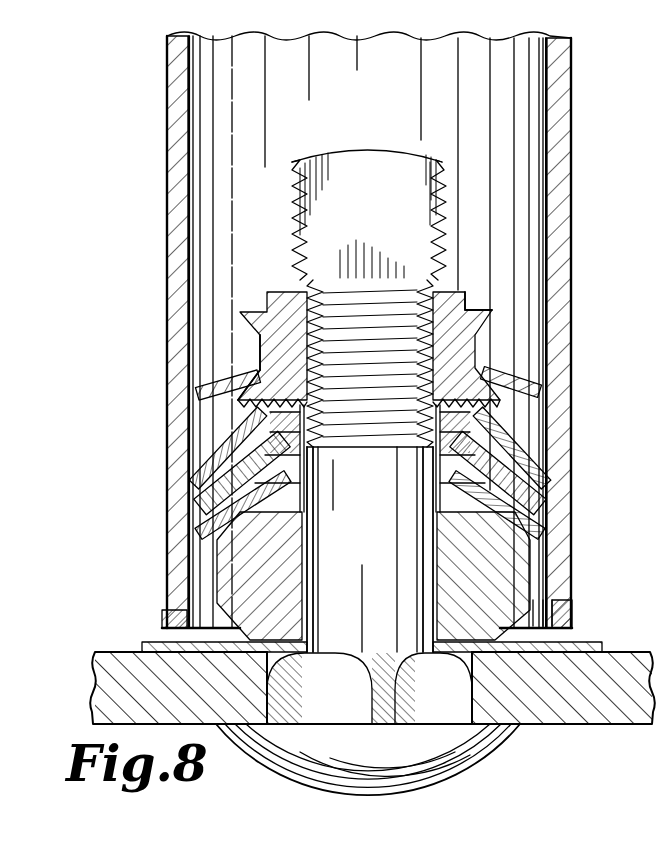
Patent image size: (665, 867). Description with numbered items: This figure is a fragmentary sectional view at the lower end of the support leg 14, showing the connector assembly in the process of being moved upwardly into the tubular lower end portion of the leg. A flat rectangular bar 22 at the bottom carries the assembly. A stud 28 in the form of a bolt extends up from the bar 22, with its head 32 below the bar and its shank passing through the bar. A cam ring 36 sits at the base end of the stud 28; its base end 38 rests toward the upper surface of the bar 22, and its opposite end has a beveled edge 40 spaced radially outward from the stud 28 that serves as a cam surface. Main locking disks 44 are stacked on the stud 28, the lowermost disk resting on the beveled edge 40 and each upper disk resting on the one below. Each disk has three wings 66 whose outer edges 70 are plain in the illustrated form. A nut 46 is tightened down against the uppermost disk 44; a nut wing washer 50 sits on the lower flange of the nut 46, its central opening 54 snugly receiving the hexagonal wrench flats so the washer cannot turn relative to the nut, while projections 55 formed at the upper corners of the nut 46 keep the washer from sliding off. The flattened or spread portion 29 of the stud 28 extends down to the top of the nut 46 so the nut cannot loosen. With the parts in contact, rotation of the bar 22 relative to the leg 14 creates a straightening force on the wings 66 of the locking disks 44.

The support leg 14 is at (572, 320).
The flat rectangular bar 22 is at (584, 707).
The stud 28 is at (378, 547).
The flattened or spread portion of stud 29 is at (328, 229).
The head 32 is at (450, 767).
The cam ring 36 is at (508, 580).
The base end of cam ring 38 is at (515, 667).
The edge 40 is at (530, 518).
The main locking disk 44 is at (548, 498).
The nut 46 is at (262, 290).
The nut wing washer 50 is at (262, 378).
The central opening 54 is at (264, 345).
The projections 55 is at (476, 306).
The wing 66 is at (235, 452).
The outer edge of wing 70 is at (215, 476).